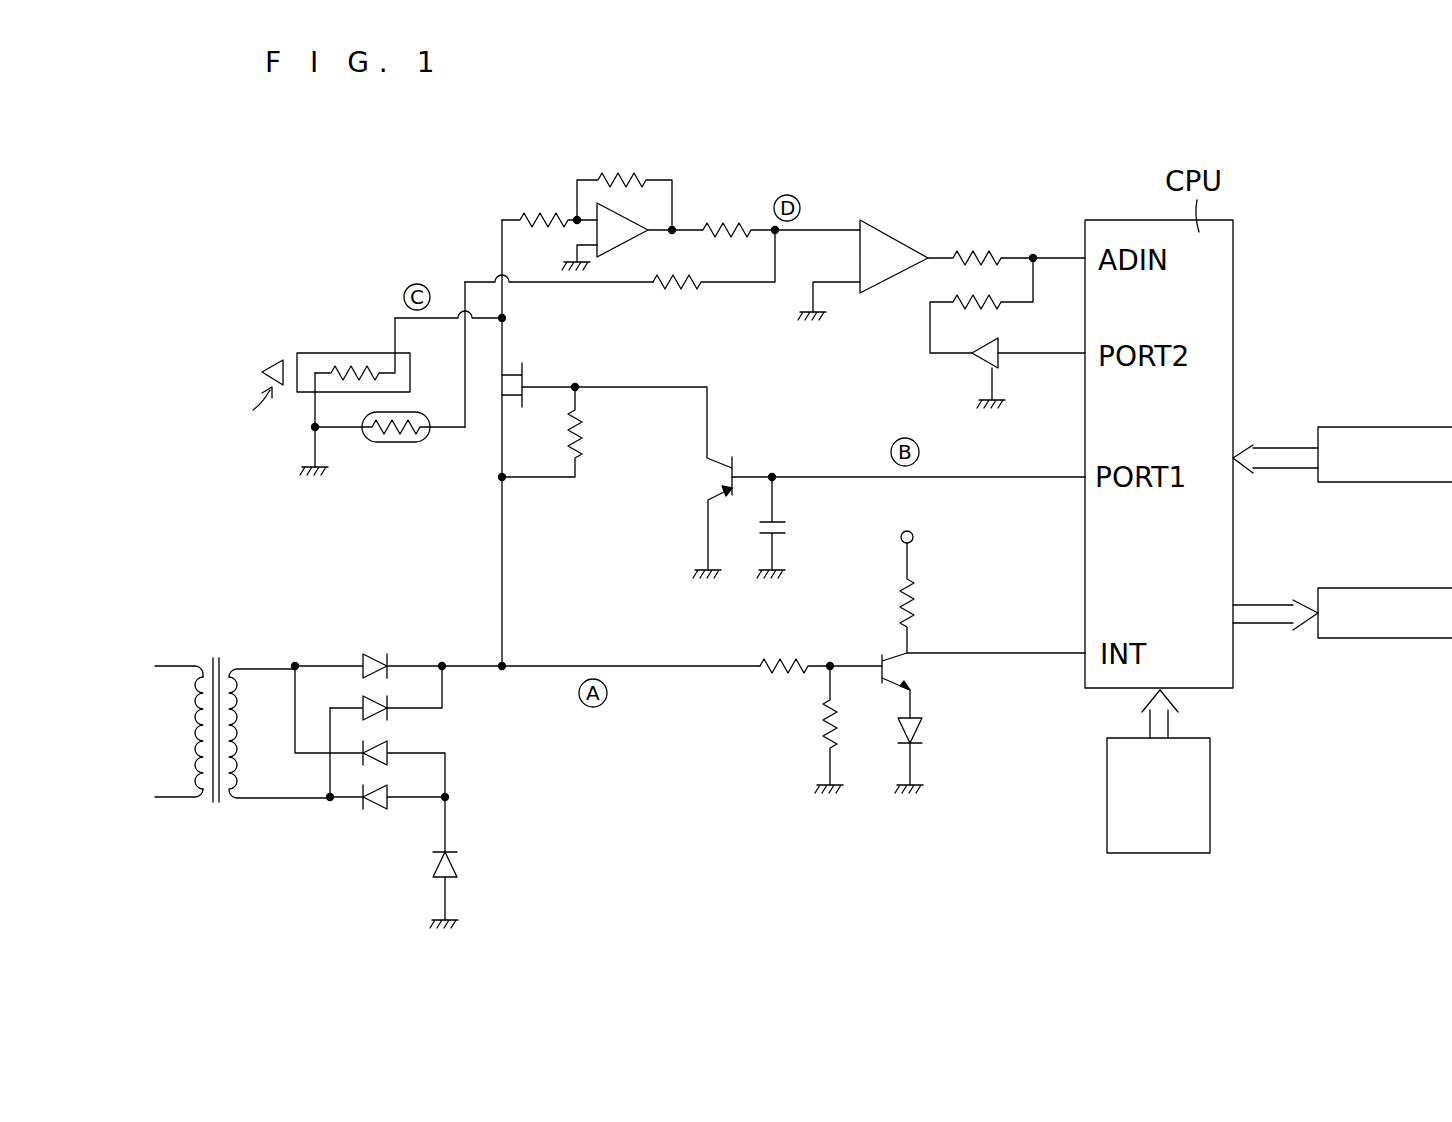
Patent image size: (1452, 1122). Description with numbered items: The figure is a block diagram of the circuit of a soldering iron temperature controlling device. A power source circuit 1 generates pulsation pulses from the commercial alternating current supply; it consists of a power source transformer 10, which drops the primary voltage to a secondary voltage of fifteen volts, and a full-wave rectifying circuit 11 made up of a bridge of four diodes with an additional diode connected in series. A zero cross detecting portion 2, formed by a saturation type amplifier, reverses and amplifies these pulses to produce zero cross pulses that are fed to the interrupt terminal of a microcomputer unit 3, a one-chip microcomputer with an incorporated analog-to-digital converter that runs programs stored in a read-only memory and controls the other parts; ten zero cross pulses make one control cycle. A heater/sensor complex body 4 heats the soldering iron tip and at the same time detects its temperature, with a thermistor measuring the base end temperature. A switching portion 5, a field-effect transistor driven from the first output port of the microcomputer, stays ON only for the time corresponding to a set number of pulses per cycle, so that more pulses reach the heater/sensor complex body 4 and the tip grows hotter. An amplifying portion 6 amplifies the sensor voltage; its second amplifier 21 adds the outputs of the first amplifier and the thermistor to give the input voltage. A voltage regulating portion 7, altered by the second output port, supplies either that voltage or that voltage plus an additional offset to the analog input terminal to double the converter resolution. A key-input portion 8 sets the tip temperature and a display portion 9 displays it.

The power source circuit 1 is at (306, 891).
The zero cross detecting portion 2 is at (886, 872).
The microcomputer unit 3 is at (1168, 914).
The heater/sensor complex body 4 is at (298, 326).
The switching portion 5 is at (613, 363).
The amplifying portion 6 is at (747, 184).
The voltage regulating portion 7 is at (1016, 204).
The key-input portion 8 is at (1402, 427).
The display portion 9 is at (1395, 640).
The power source transformer 10 is at (213, 648).
The full-wave rectifying circuit 11 is at (356, 654).
The second amplifier 21 is at (762, 248).